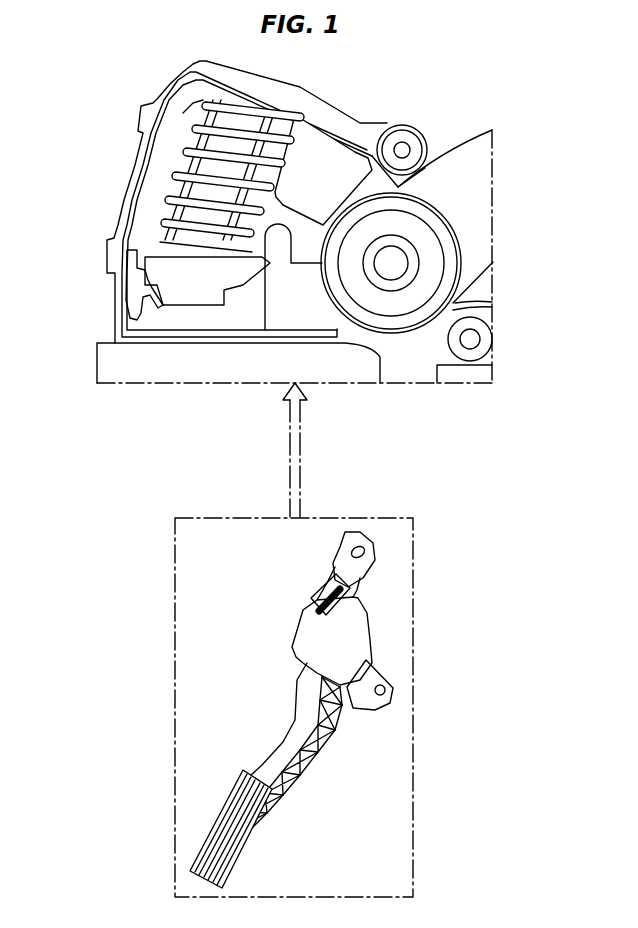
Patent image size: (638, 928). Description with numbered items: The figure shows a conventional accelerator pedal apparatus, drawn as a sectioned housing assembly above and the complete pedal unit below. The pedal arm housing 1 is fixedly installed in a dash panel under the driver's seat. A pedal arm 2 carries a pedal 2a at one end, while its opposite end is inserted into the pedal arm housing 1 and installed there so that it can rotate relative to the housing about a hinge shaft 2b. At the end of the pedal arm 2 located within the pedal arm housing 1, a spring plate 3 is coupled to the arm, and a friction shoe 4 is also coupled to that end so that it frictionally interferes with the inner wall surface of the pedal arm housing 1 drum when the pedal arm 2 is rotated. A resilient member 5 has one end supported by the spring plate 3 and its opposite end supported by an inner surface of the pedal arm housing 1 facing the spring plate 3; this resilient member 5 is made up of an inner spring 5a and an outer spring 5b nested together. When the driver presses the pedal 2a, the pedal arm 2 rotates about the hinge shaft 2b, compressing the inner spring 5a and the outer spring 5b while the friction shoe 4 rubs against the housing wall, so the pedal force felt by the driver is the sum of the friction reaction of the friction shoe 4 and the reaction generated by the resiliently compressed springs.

The pedal arm housing 1 is at (152, 143).
The pedal arm 2 is at (477, 215).
The pedal 2a is at (217, 820).
The hinge shaft 2b is at (391, 265).
The spring plate 3 is at (188, 275).
The friction shoe 4 is at (132, 288).
The resilient member 5 is at (166, 170).
The inner spring 5a is at (176, 203).
The outer spring 5b is at (172, 176).